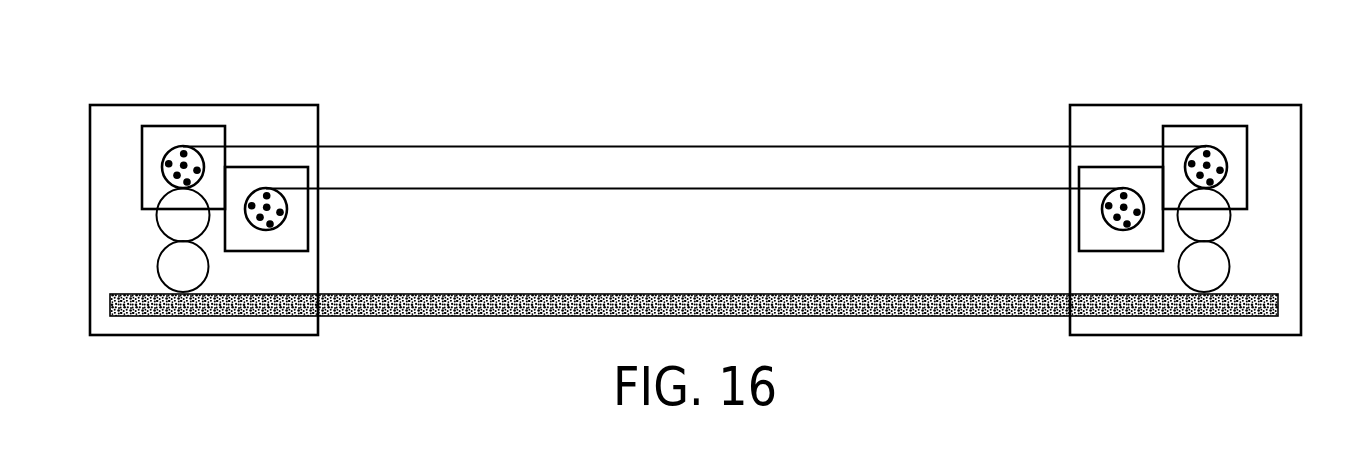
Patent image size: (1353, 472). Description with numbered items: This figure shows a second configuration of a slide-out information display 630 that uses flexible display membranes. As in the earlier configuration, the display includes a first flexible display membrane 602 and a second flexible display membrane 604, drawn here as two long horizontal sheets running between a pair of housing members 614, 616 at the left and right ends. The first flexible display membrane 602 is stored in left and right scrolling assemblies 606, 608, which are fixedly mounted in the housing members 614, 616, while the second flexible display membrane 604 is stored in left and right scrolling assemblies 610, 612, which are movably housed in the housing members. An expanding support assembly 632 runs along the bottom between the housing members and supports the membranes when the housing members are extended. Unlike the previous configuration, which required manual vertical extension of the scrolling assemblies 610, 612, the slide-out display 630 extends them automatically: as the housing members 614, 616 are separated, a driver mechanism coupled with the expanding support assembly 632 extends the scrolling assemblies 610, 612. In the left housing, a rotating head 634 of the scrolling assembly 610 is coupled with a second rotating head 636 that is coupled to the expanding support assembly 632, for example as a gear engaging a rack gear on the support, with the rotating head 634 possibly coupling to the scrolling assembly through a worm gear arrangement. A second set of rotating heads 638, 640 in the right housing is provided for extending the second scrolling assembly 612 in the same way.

The slide-out display 630 is at (714, 95).
The first flexible display membrane 602 is at (538, 187).
The second flexible display membrane 604 is at (760, 146).
The left scrolling assembly 606 is at (297, 206).
The right scrolling assembly 608 is at (1088, 205).
The left scrolling assembly 610 is at (182, 133).
The right scrolling assembly 612 is at (1207, 133).
The housing member 614 is at (307, 280).
The housing member 616 is at (1078, 279).
The expanding support assembly 632 is at (708, 292).
The rotating head 634 is at (170, 225).
The second rotating head 636 is at (170, 275).
The rotating head 638 is at (1217, 225).
The rotating head 640 is at (1217, 276).